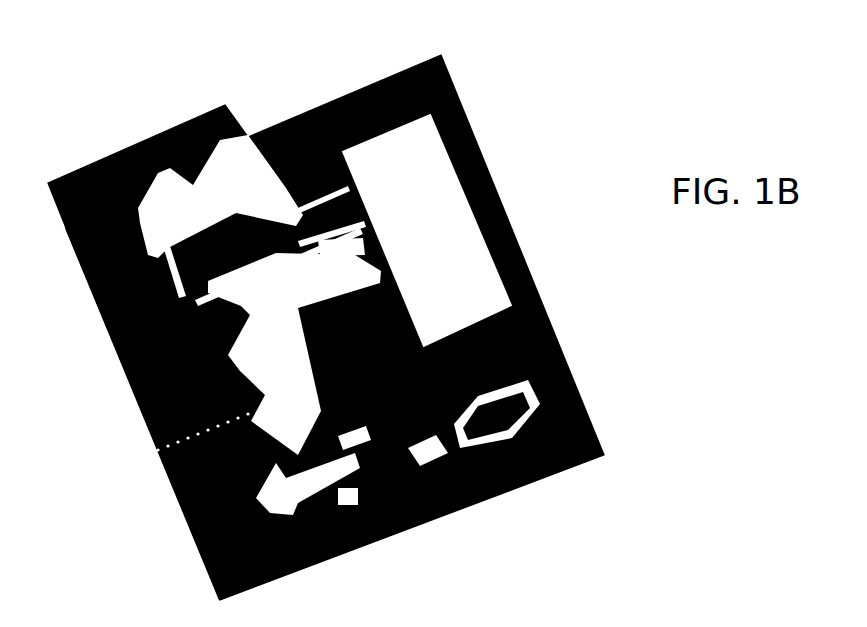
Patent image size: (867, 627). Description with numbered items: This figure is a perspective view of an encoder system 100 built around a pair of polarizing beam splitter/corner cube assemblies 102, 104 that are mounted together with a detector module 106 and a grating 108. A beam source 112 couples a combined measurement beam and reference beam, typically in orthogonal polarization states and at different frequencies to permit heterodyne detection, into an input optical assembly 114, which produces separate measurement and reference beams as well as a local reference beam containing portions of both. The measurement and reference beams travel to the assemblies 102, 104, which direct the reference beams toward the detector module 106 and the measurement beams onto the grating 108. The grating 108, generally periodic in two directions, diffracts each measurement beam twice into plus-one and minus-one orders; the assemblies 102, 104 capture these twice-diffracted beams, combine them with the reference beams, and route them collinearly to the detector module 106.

The encoder system 100 is at (662, 441).
The polarizing beam splitter/corner cube assembly 102 is at (229, 220).
The polarizing beam splitter/corner cube assembly 104 is at (125, 387).
The detector module 106 is at (420, 150).
The grating 108 is at (268, 366).
The beam source 112 is at (596, 456).
The input optical assembly 114 is at (430, 489).